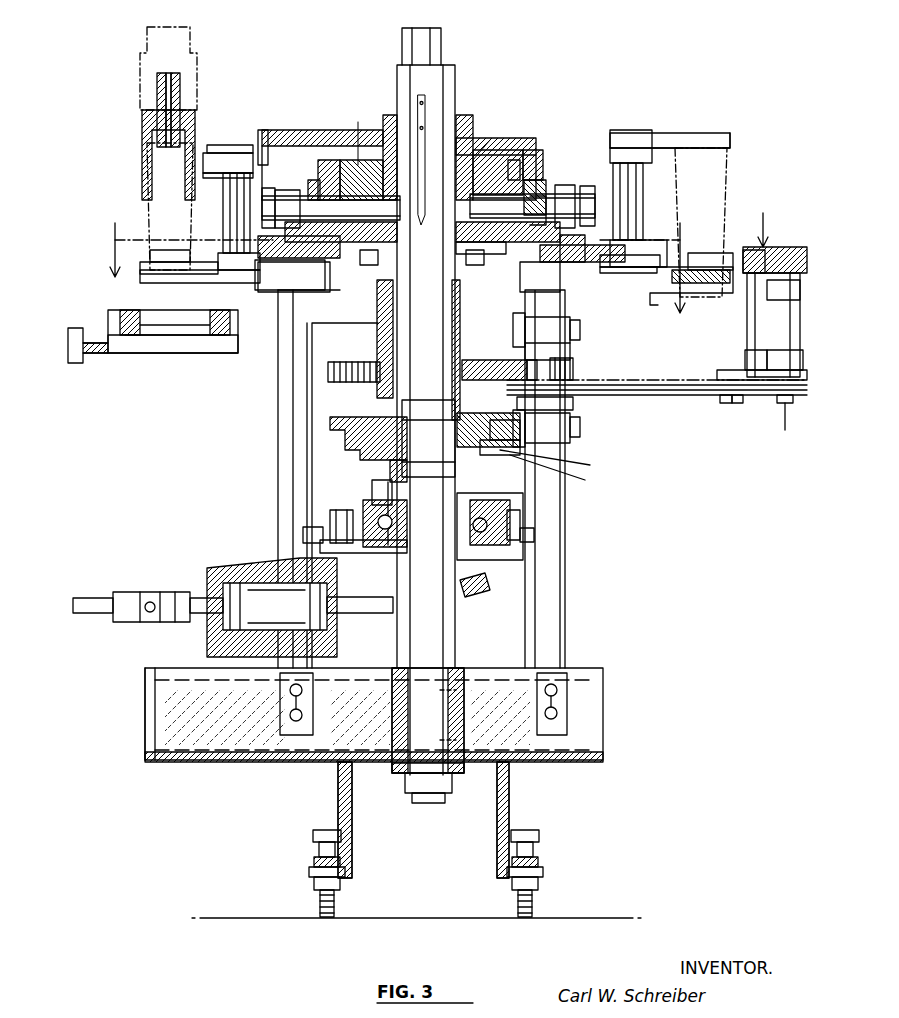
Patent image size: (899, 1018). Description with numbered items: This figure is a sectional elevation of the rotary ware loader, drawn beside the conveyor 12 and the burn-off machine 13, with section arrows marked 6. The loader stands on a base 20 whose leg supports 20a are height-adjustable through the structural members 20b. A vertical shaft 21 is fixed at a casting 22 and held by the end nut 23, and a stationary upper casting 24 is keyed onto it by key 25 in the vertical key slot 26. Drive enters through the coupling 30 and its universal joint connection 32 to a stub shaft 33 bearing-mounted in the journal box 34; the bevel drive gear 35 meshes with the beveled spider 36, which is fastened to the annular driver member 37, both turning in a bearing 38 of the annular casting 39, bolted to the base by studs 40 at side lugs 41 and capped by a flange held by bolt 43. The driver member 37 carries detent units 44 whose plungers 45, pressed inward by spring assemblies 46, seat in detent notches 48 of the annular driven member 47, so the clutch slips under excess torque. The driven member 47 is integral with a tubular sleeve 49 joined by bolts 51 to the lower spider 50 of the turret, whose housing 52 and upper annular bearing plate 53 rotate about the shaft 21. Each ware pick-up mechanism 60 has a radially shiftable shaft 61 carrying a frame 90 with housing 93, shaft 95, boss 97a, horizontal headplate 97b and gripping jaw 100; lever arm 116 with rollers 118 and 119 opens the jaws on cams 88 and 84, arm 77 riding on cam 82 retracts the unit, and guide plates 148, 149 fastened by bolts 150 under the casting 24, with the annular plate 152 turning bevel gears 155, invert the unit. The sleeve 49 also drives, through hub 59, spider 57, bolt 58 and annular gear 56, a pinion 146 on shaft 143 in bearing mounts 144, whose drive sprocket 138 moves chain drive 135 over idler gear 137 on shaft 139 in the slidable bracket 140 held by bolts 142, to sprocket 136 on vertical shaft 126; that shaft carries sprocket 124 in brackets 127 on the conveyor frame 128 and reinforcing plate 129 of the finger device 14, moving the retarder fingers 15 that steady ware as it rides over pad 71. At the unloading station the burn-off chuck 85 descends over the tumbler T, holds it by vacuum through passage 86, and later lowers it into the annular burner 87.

The section line 6- 6 is at (384, 278).
The conveyor 12 is at (740, 255).
The burn-off machine 13 is at (70, 328).
The tool changer support 14 is at (772, 221).
The fingers 15 is at (705, 253).
The base 20 is at (275, 440).
The leg supports 20a is at (313, 850).
The structural members 20b is at (338, 803).
The vertical shaft 21 is at (444, 42).
The casting 22 is at (455, 685).
The end nut 23 is at (448, 792).
The upper casting 24 is at (462, 148).
The key 25 is at (428, 112).
The vertical key slot 26 is at (427, 230).
The coupling 30 is at (95, 598).
The universal joint connection 32 is at (140, 592).
The stub shaft 33 is at (205, 598).
The journal box 34 is at (255, 530).
The bevel drive gear 35 is at (370, 613).
The beveled spider 36 is at (480, 597).
The annular driver member 37 is at (388, 465).
The bearing 38 is at (510, 490).
The annular casting 39 is at (363, 510).
The studs 40 is at (332, 515).
The side lugs 41 is at (303, 532).
The bolt 43 is at (372, 488).
The detent units 44 is at (556, 462).
The detent plunger 45 is at (500, 455).
The spring assembly 46 is at (557, 471).
The annular driven member 47 is at (480, 413).
The detent notches 48 is at (505, 416).
The sleeve structure 49 is at (377, 305).
The lower spider 50 is at (500, 250).
The bolts 51 is at (370, 265).
The housing 52 is at (310, 180).
The upper annular bearing plate 53 is at (330, 160).
The annular gear 56 is at (352, 362).
The spider 57 is at (480, 360).
The bolt 58 is at (518, 355).
The hub 59 is at (378, 398).
The ware pick-up mechanism 60 is at (223, 118).
The shaft 61 is at (285, 200).
The pad 71 is at (727, 293).
The arm 77 is at (270, 258).
The cam 82 is at (286, 262).
The cam 84 is at (300, 130).
The burn-off chuck 85 is at (143, 120).
The passage 86 is at (158, 83).
The annular burner 87 is at (120, 353).
The cam 88 is at (575, 262).
The frame 90 is at (270, 175).
The housing 93 is at (435, 200).
The shaft 95 is at (225, 215).
The boss 97a is at (240, 283).
The horizontal headplate 97b is at (180, 283).
The gripping jaw 100 is at (175, 262).
The lever arm 116 is at (230, 145).
The roller 118 is at (598, 250).
The roller 119 is at (266, 130).
The sprocket 124 is at (800, 247).
The vertical shaft 126 is at (786, 428).
The brackets 127 is at (770, 290).
The conveyor frame 128 is at (690, 283).
The structural reinforcing plate 129 is at (752, 340).
The chain drive 135 is at (655, 385).
The sprocket 136 is at (783, 403).
The idler gear 137 is at (725, 403).
The drive sprocket 138 is at (573, 403).
The shaft 139 is at (738, 403).
The bracket 140 is at (730, 360).
The bolts 142 is at (745, 355).
The shaft 143 is at (570, 350).
The bearing mounts 144 is at (545, 328).
The pinion 146 is at (573, 368).
The guide plate segment 148 is at (540, 150).
The guide plate segment 149 is at (390, 115).
The bolts 150 is at (378, 127).
The annular plate 152 is at (360, 160).
The bevel gears 155 is at (395, 225).
The tumbler T is at (168, 190).